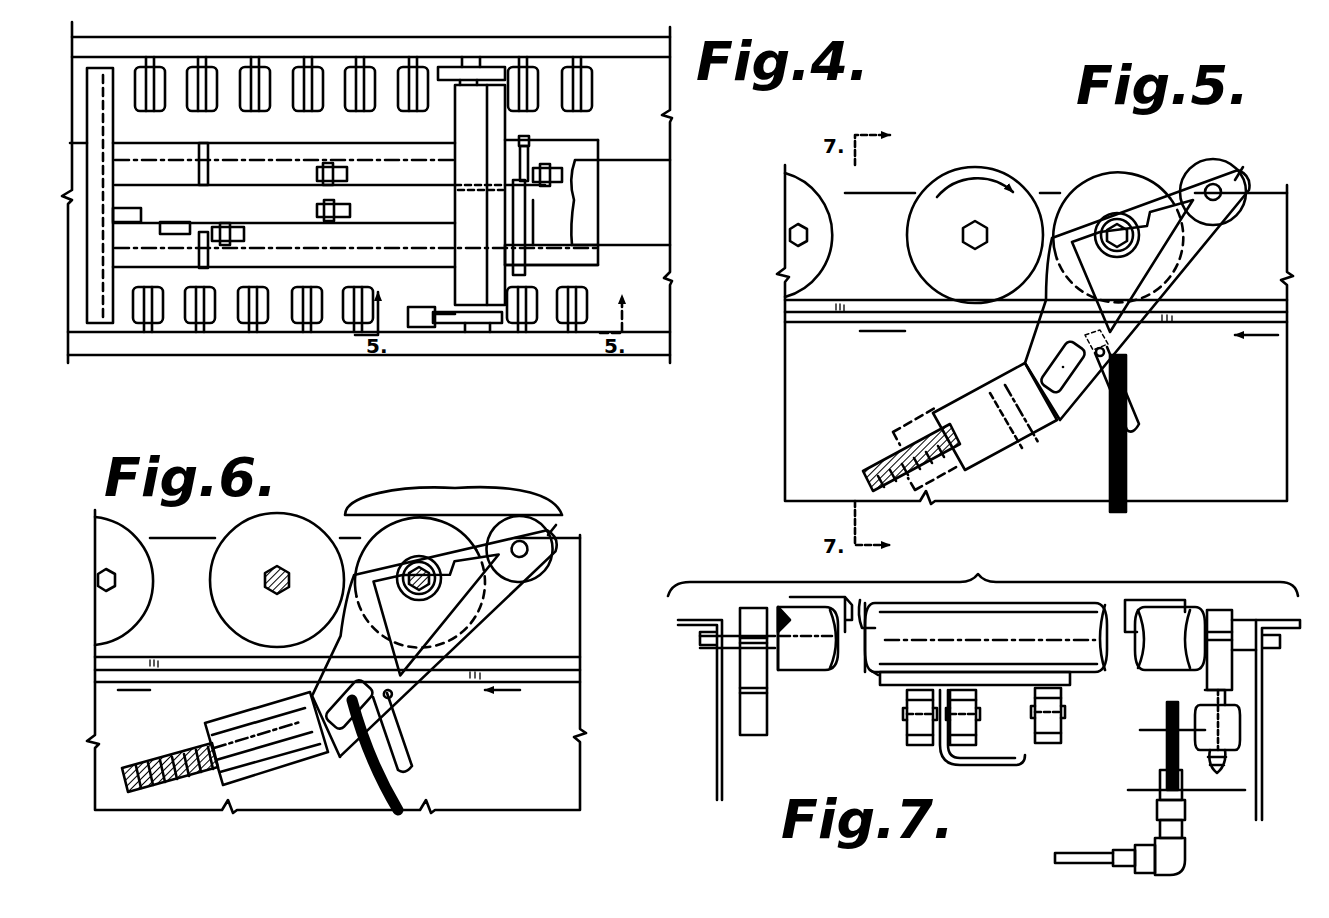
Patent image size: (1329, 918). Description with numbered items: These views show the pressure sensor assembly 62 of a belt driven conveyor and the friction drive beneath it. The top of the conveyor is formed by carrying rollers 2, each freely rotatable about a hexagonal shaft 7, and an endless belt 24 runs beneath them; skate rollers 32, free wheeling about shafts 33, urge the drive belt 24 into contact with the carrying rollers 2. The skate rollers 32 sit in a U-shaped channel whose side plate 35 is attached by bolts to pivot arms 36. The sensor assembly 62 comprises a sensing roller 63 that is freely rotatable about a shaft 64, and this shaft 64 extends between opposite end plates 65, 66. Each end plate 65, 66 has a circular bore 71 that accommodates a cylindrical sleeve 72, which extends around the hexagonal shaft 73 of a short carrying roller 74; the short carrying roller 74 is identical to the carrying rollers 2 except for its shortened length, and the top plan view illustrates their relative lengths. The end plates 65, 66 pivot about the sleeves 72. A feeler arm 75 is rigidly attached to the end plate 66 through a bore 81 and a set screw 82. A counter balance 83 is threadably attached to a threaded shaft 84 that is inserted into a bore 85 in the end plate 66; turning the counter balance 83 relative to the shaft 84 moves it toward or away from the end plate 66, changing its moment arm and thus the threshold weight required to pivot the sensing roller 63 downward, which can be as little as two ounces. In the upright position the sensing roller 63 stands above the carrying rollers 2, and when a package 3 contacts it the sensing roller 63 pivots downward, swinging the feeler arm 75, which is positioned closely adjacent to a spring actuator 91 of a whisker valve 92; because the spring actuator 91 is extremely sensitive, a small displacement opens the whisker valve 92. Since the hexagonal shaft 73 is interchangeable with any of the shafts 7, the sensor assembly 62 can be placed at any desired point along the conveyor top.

In FIG. 4, the carrying rollers 2 is at (398, 93).
In FIG. 5, the carrying rollers 2 is at (960, 180).
In FIG. 6, the carrying rollers 2 is at (266, 520).
In FIG. 6, the package 3 is at (452, 492).
In FIG. 4, the hexagonal shaft 7 is at (268, 57).
In FIG. 4, the endless belt 24 is at (629, 216).
In FIG. 5, the endless belt 24 is at (902, 303).
In FIG. 6, the endless belt 24 is at (210, 655).
In FIG. 7, the endless belt 24 is at (1070, 683).
In FIG. 4, the skate rollers 32 is at (350, 207).
In FIG. 7, the skate rollers 32 is at (1000, 766).
In FIG. 4, the shafts 33 is at (348, 175).
In FIG. 7, the shafts 33 is at (908, 745).
In FIG. 4, the side plate 35 is at (180, 228).
In FIG. 4, the pivot arms 36 is at (532, 228).
In FIG. 4, the sensor assembly 62 is at (530, 137).
In FIG. 5, the sensor assembly 62 is at (1238, 158).
In FIG. 6, the sensor assembly 62 is at (560, 555).
In FIG. 7, the sensor assembly 62 is at (1232, 615).
In FIG. 4, the sensing roller 63 is at (495, 120).
In FIG. 5, the sensing roller 63 is at (1203, 160).
In FIG. 6, the sensing roller 63 is at (540, 572).
In FIG. 7, the sensing roller 63 is at (1076, 603).
In FIG. 5, the shaft 64 is at (1223, 190).
In FIG. 6, the shaft 64 is at (532, 545).
In FIG. 4, the end plate 65 is at (500, 62).
In FIG. 7, the end plate 65 is at (767, 696).
In FIG. 4, the end plate 66 is at (493, 332).
In FIG. 5, the end plate 66 is at (1170, 274).
In FIG. 6, the end plate 66 is at (468, 612).
In FIG. 7, the end plate 66 is at (1200, 690).
In FIG. 5, the circular bore 71 is at (1100, 220).
In FIG. 6, the circular bore 71 is at (407, 562).
In FIG. 5, the cylindrical sleeve 72 is at (1122, 260).
In FIG. 6, the cylindrical sleeve 72 is at (438, 578).
In FIG. 7, the cylindrical sleeve 72 is at (775, 605).
In FIG. 5, the hexagonal shaft 73 is at (1135, 232).
In FIG. 6, the hexagonal shaft 73 is at (412, 598).
In FIG. 4, the short carrying roller 74 is at (455, 300).
In FIG. 5, the short carrying roller 74 is at (1104, 176).
In FIG. 6, the short carrying roller 74 is at (375, 532).
In FIG. 7, the short carrying roller 74 is at (883, 678).
In FIG. 5, the feeler arm 75 is at (1136, 416).
In FIG. 6, the feeler arm 75 is at (404, 745).
In FIG. 7, the feeler arm 75 is at (1148, 732).
In FIG. 5, the bore 81 is at (1085, 337).
In FIG. 5, the set screw 82 is at (1096, 353).
In FIG. 6, the set screw 82 is at (384, 694).
In FIG. 5, the counter balance 83 is at (962, 400).
In FIG. 6, the counter balance 83 is at (266, 738).
In FIG. 5, the threaded shaft 84 is at (880, 470).
In FIG. 6, the threaded shaft 84 is at (170, 767).
In FIG. 5, the bore 85 is at (1018, 398).
In FIG. 5, the spring actuator 91 is at (1126, 458).
In FIG. 6, the spring actuator 91 is at (385, 792).
In FIG. 7, the spring actuator 91 is at (1165, 765).
In FIG. 7, the whisker valve 92 is at (1158, 802).